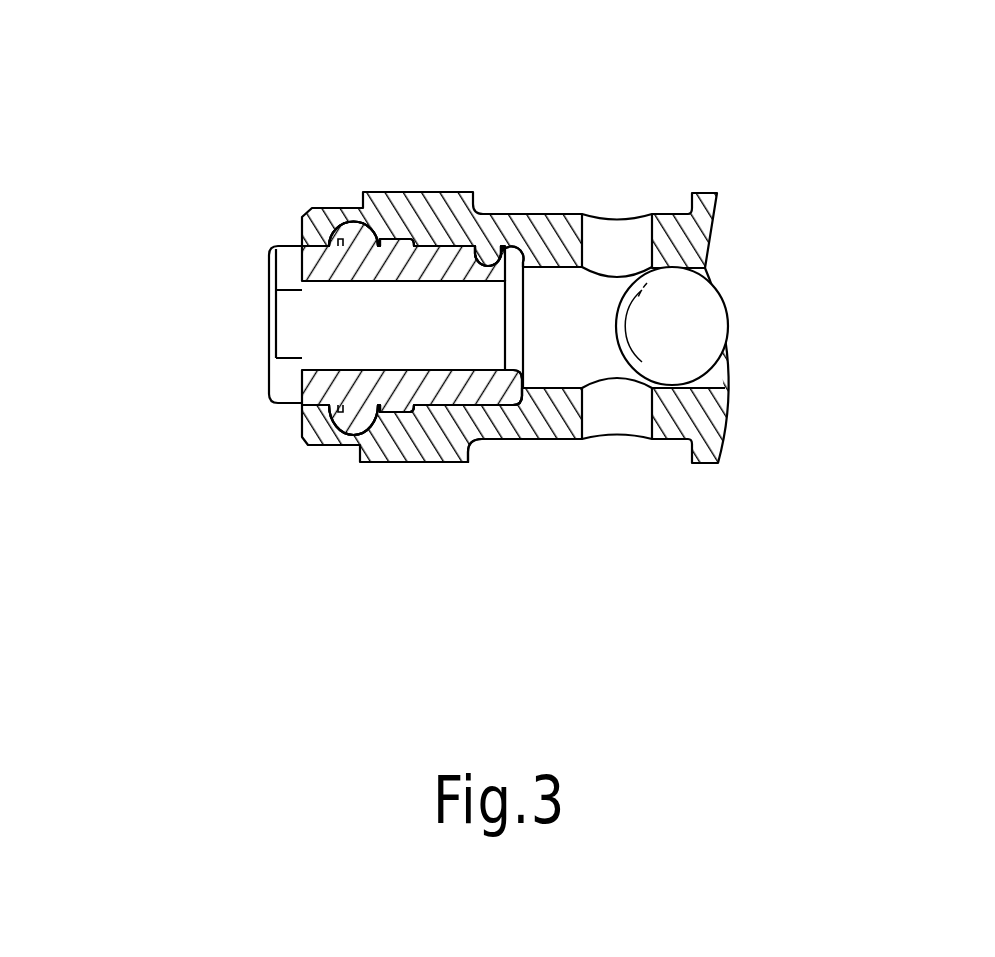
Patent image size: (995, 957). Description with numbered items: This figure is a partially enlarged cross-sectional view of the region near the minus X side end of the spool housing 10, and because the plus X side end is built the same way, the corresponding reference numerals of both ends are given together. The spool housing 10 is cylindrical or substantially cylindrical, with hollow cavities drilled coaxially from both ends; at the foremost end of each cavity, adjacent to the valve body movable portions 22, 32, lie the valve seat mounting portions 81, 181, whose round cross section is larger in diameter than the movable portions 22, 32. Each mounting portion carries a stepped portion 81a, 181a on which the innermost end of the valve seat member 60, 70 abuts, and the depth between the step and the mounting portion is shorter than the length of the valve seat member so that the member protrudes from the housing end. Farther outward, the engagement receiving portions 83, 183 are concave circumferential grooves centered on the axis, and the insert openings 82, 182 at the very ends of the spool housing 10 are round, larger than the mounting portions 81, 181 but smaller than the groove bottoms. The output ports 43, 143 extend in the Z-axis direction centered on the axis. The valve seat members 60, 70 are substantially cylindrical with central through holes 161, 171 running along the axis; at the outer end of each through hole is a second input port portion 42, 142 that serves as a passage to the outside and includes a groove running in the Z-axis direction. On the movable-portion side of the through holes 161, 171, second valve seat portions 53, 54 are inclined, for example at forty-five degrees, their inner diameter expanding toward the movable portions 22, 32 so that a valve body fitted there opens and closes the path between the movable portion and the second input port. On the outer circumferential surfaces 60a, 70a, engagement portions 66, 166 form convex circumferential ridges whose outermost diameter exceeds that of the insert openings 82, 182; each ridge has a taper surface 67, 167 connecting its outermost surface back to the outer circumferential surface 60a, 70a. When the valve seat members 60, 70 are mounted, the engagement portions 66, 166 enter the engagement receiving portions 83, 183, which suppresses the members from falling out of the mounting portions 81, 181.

The spool housing 10 is at (434, 188).
The valve body movable portion 22 is at (710, 266).
The valve body movable portion 32 is at (579, 316).
The second input port portion 42 is at (191, 379).
The second input port portion 142 is at (322, 388).
The output port 43 is at (670, 266).
The output port 143 is at (624, 218).
The second valve seat portion 53 is at (567, 433).
The second valve seat portion 54 is at (525, 357).
The valve seat member 60 is at (410, 459).
The valve seat member 70 is at (303, 396).
The outer circumferential surface 60a is at (536, 523).
The outer circumferential surface 70a is at (498, 426).
The engagement portion 66 is at (325, 523).
The engagement portion 166 is at (359, 433).
The taper surface 67 is at (436, 522).
The taper surface 167 is at (398, 425).
The through hole 161 is at (403, 414).
The through hole 171 is at (436, 358).
The valve seat mounting portion 81 is at (532, 185).
The valve seat mounting portion 181 is at (493, 252).
The stepped portion 81a is at (643, 135).
The stepped portion 181a is at (518, 246).
The insert opening 82 is at (300, 329).
The insert opening 182 is at (308, 274).
The engagement receiving portion 83 is at (373, 162).
The engagement receiving portion 183 is at (344, 230).